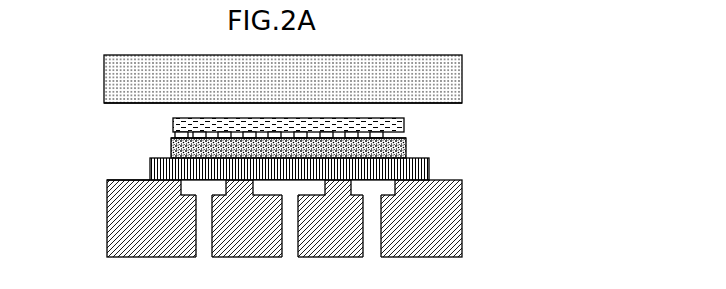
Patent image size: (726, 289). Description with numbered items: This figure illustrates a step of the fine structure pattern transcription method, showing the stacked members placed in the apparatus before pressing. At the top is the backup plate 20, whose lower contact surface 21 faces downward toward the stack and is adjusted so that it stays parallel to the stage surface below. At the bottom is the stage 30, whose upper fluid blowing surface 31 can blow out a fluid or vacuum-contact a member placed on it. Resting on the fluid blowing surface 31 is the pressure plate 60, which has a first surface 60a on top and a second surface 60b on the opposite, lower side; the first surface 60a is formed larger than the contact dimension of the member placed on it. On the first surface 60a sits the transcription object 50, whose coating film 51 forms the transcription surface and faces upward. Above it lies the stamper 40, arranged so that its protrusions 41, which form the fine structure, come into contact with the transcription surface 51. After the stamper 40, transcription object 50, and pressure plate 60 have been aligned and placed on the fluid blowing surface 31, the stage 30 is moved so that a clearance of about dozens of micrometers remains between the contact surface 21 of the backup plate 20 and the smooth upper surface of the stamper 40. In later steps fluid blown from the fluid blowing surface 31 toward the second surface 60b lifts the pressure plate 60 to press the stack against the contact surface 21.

The backup plate 20 is at (462, 80).
The contact surface 21 is at (120, 103).
The stamper 40 is at (404, 125).
The protrusions 41 is at (278, 133).
The transcription object 50 is at (406, 145).
The coating film 51 is at (174, 129).
The pressure plate 60 is at (350, 201).
The first surface 60a is at (415, 168).
The second surface 60b is at (417, 179).
The stage 30 is at (462, 218).
The fluid blowing surface 31 is at (137, 180).